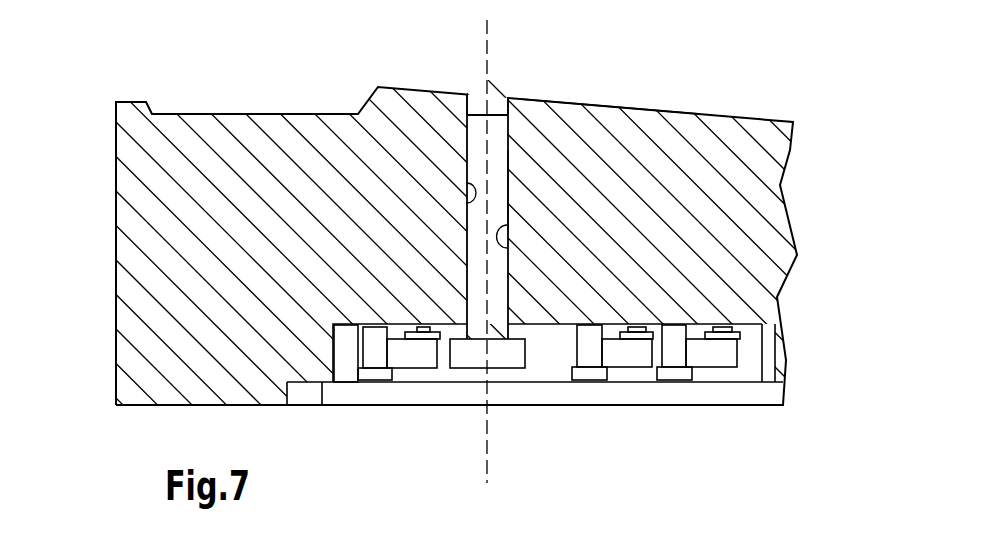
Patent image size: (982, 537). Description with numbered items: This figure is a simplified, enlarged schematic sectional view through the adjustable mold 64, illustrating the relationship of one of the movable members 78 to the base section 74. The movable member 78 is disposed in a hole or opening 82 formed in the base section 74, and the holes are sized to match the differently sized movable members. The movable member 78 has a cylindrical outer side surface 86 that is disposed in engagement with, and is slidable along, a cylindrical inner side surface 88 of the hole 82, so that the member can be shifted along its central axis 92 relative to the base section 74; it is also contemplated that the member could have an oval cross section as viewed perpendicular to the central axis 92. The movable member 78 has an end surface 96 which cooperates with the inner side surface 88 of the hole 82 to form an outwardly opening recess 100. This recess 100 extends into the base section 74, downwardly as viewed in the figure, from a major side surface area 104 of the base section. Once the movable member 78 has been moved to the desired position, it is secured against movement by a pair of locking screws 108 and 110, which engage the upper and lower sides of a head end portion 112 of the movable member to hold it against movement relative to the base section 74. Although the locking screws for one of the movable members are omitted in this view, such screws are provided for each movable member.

The tool holder assembly 64 is at (100, 248).
The base section 74 is at (172, 338).
The movable member 78 is at (475, 240).
The hole or opening 82 is at (466, 181).
The outer side surface 86 is at (497, 203).
The inner side surface 88 is at (508, 246).
The central axis 92 is at (488, 443).
The end surface 96 is at (497, 102).
The recess 100 is at (480, 100).
The major side surface area 104 is at (602, 104).
The locking screw 108 is at (372, 350).
The locking screw 110 is at (418, 350).
The head end portion 112 is at (402, 350).